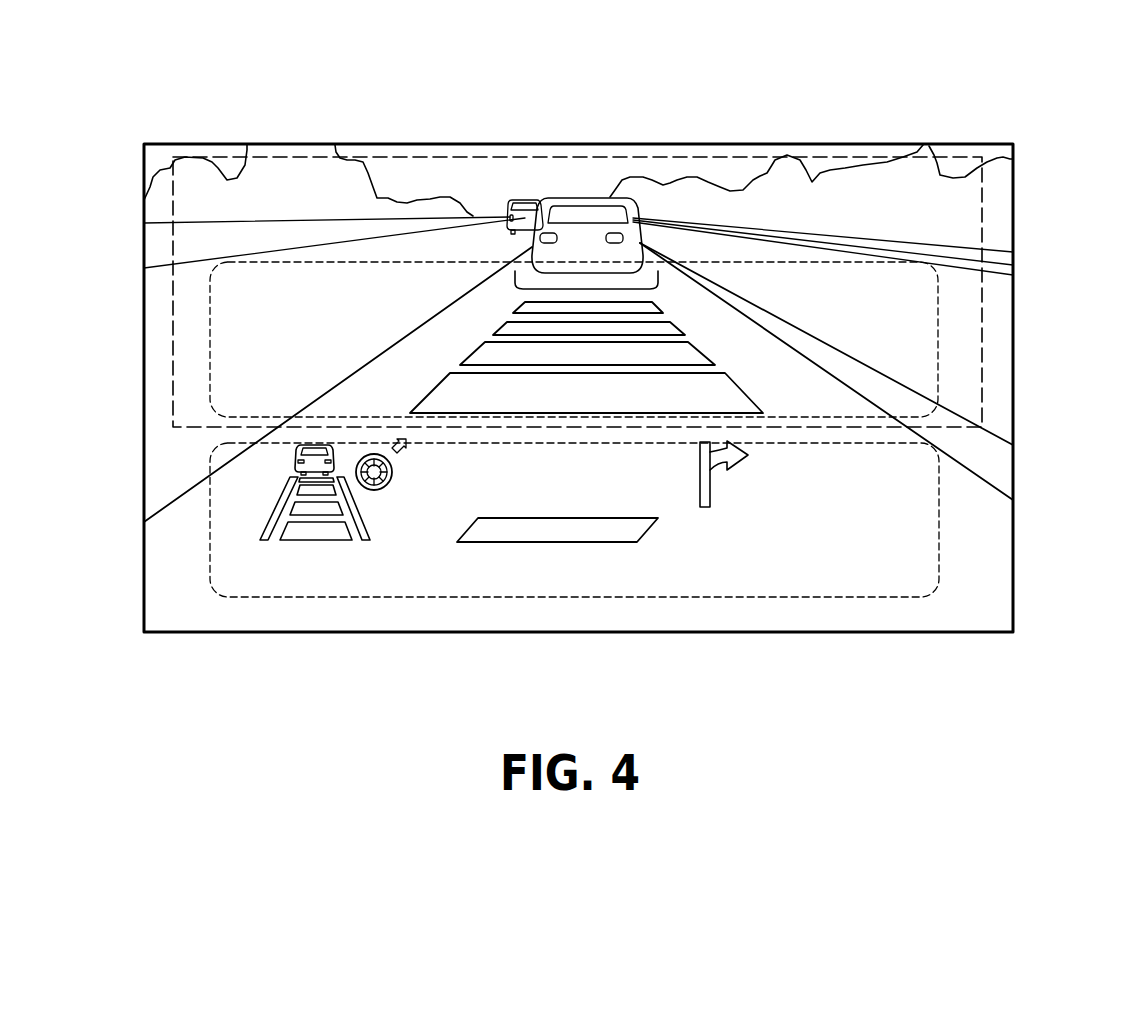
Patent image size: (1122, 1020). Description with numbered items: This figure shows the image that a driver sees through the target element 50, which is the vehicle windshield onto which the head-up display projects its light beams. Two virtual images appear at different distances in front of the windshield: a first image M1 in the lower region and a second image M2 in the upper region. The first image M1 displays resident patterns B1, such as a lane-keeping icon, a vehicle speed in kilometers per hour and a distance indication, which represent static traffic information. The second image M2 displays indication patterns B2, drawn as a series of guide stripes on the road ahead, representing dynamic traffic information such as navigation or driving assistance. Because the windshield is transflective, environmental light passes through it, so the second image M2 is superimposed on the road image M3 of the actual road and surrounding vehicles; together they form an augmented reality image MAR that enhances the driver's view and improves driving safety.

The target element 50 is at (980, 145).
The augmented reality image MAR is at (982, 205).
The second image M2 is at (938, 333).
The first image M1 is at (939, 530).
The road image M3 is at (478, 318).
The indication patterns B2 is at (678, 353).
The resident patterns B1 is at (315, 543).